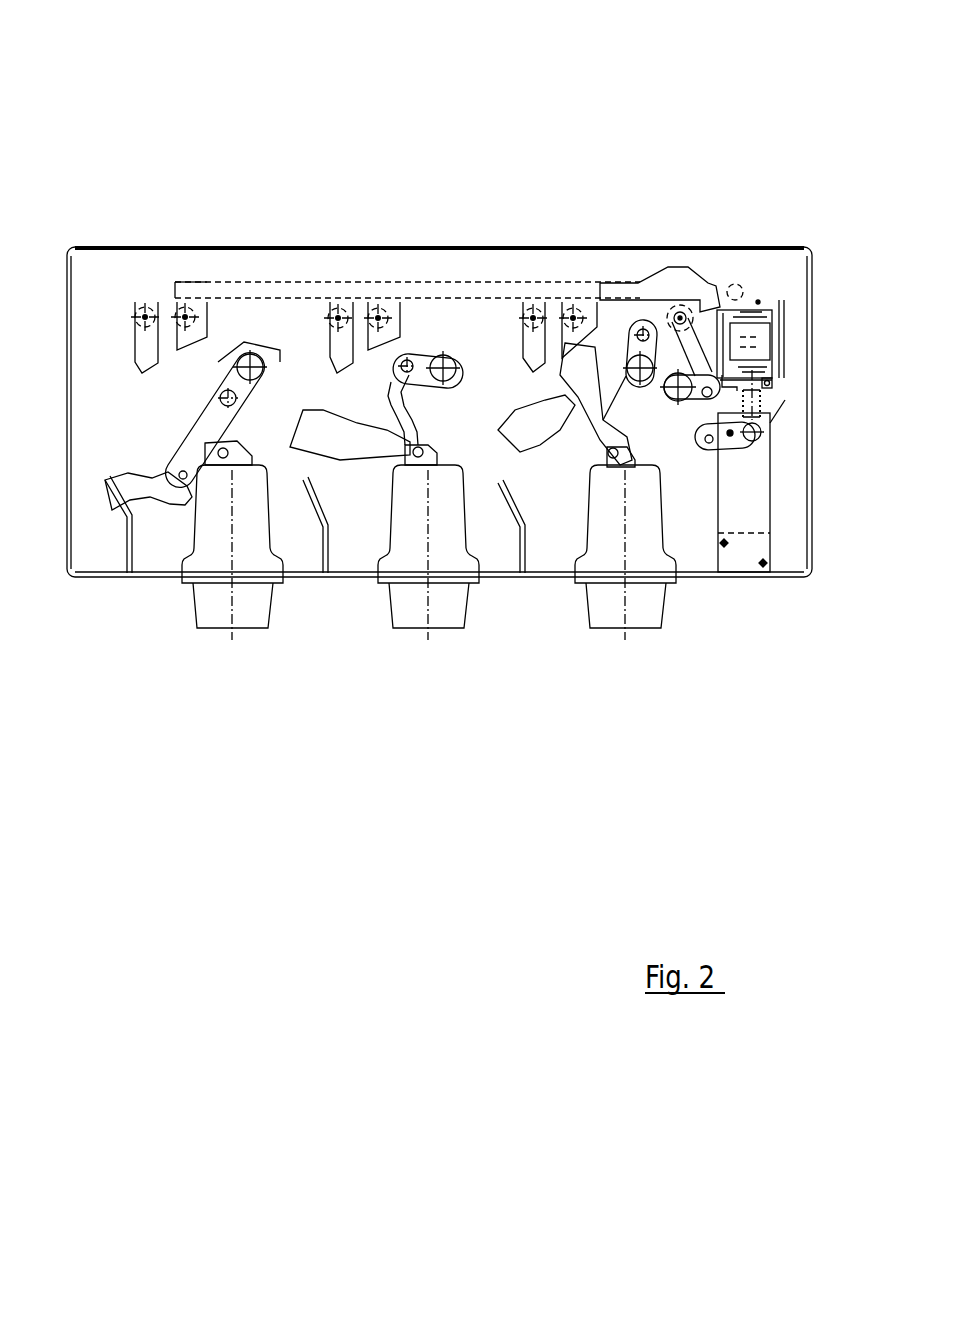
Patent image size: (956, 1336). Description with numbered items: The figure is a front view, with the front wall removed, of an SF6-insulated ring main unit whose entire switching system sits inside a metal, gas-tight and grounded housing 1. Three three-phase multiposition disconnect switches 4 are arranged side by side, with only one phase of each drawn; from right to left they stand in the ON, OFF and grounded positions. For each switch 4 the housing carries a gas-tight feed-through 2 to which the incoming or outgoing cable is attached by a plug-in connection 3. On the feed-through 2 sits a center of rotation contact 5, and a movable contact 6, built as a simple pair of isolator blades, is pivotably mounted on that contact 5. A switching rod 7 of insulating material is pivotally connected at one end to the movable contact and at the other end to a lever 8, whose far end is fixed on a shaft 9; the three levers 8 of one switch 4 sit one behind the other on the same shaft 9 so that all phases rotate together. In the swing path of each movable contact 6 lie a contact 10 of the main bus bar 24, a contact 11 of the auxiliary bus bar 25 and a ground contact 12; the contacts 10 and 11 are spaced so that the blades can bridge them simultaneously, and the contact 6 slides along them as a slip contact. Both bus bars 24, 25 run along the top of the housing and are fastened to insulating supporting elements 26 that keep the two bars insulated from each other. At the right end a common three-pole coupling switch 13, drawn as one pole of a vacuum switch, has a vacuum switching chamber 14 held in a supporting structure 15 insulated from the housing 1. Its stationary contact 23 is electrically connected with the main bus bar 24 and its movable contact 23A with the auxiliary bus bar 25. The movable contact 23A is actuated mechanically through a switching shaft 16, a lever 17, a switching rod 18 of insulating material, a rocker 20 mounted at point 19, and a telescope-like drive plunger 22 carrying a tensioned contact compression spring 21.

The housing 1 is at (439, 357).
The feed-through 2 is at (423, 651).
The plug-in connection 3 is at (429, 710).
The multiposition disconnect switch 4 is at (417, 433).
The center of rotation contact 5 is at (251, 463).
The movable contact 6 is at (333, 616).
The switching rod 7 is at (380, 487).
The lever 8 is at (250, 354).
The shaft 9 is at (437, 405).
The contact of the main bus bar 10 is at (391, 211).
The contact of the auxiliary bus bar 11 is at (318, 219).
The ground contact 12 is at (315, 657).
The coupling switch 13 is at (763, 350).
The vacuum switching chamber 14 is at (801, 392).
The supporting structure 15 is at (714, 587).
The switching shaft 16 is at (710, 387).
The lever 17 is at (758, 300).
The switching rod 18 is at (735, 619).
The mounting point 19 is at (741, 447).
The rocker 20 is at (754, 448).
The contact compression spring 21 is at (802, 578).
The drive plunger 22 is at (783, 425).
The stationary contact 23 is at (782, 300).
The movable contact 23A is at (802, 248).
The main bus bar 24 is at (689, 270).
The auxiliary bus bar 25 is at (651, 288).
The insulating supporting element 26 is at (147, 307).